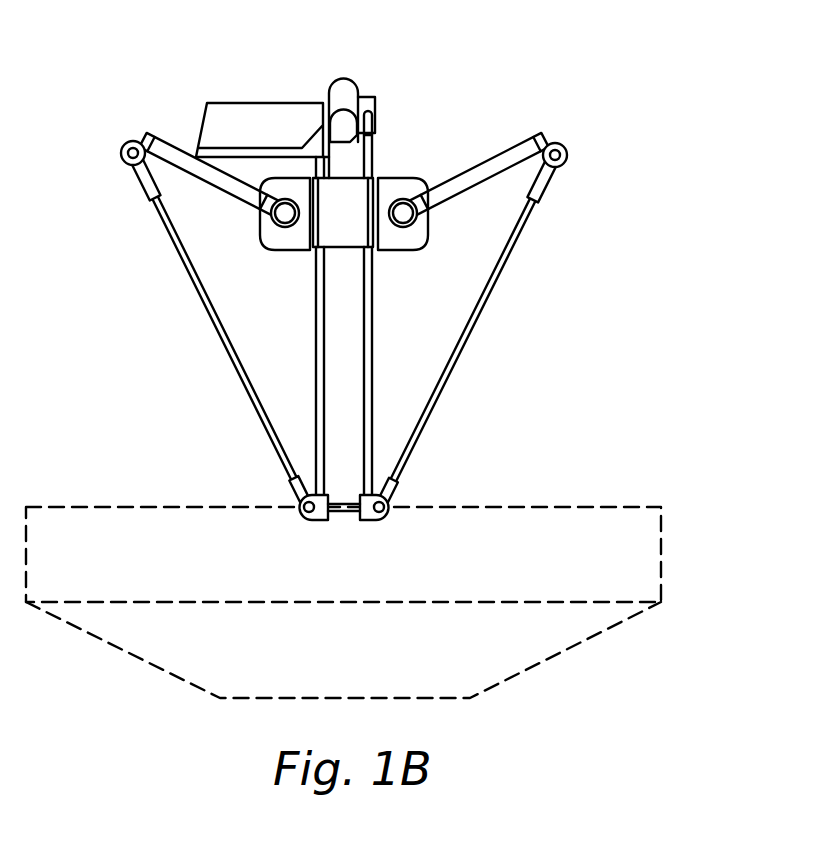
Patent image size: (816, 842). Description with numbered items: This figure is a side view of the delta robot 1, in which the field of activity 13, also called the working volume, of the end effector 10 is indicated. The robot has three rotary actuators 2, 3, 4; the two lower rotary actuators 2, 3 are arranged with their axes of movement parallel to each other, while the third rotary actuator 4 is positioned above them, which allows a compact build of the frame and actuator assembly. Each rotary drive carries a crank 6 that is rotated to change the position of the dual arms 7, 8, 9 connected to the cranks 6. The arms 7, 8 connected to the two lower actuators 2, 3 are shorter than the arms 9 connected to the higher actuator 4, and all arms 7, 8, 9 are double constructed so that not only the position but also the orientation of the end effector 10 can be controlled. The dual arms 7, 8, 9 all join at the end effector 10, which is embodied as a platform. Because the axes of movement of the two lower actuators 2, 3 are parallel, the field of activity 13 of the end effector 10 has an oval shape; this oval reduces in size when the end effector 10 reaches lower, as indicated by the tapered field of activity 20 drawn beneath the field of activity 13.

The delta robot 1 is at (112, 66).
The rotary actuator 2 is at (263, 258).
The rotary actuator 3 is at (421, 258).
The third rotary actuator 4 is at (268, 116).
The crank 6 is at (170, 131).
The dual arm 7 is at (210, 323).
The dual arm 8 is at (475, 323).
The dual arm 9 is at (314, 327).
The end effector 10 is at (344, 514).
The field of activity 13 is at (663, 548).
The tapered field of activity 20 is at (562, 652).